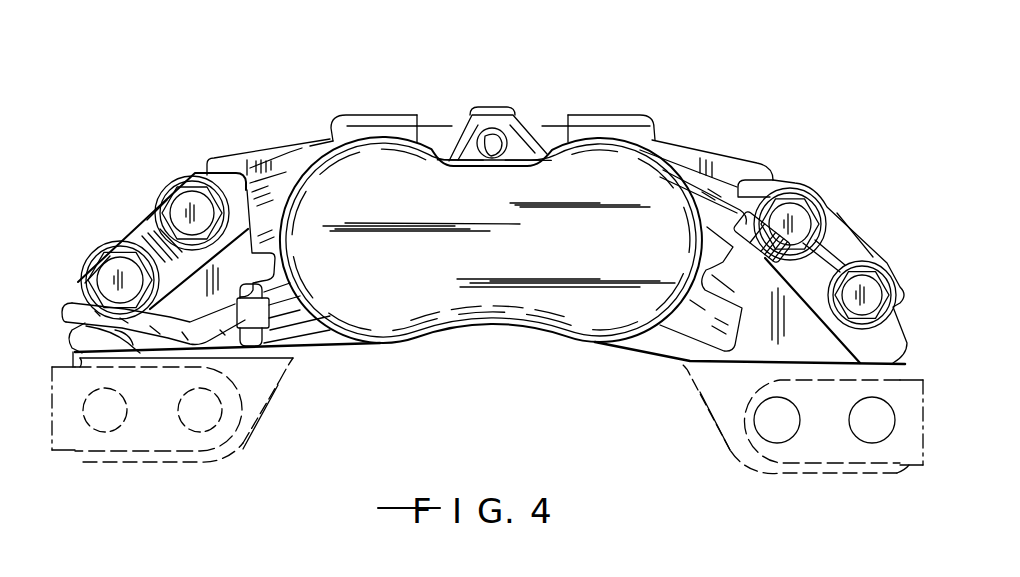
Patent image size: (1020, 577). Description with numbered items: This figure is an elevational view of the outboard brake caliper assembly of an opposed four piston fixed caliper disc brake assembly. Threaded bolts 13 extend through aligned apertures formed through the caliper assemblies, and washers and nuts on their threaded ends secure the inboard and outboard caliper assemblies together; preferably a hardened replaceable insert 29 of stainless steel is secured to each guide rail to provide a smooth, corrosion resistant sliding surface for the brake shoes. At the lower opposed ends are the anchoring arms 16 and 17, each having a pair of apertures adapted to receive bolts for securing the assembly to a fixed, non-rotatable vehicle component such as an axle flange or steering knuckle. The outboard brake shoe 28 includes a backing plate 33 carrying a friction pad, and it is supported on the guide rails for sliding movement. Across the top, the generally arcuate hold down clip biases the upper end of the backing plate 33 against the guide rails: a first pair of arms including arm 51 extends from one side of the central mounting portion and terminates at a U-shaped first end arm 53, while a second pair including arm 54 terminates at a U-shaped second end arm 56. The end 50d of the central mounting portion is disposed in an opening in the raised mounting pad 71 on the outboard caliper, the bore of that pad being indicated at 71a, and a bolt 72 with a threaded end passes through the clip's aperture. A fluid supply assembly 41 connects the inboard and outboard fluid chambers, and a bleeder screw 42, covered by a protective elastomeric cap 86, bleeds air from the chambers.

The threaded bolt 13 is at (166, 197).
The anchoring arm 16 is at (787, 468).
The anchoring arm 17 is at (152, 457).
The outboard brake shoe 28 is at (712, 154).
The hardened replaceable insert 29 is at (197, 170).
The backing plate 33 is at (242, 160).
The fluid supply assembly 41 is at (70, 308).
The bleeder screw 42 is at (707, 228).
The end of the central mounting portion 50d is at (457, 163).
The arm of the first pair of arms 51 is at (565, 123).
The first end arm 53 is at (656, 140).
The arm of the second pair of arms 54 is at (422, 123).
The second end arm 56 is at (333, 140).
The raised mounting pad 71 is at (522, 160).
The bore in boss 71a is at (490, 157).
The bolt 72 is at (492, 112).
The protective elastomeric cap 86 is at (803, 324).